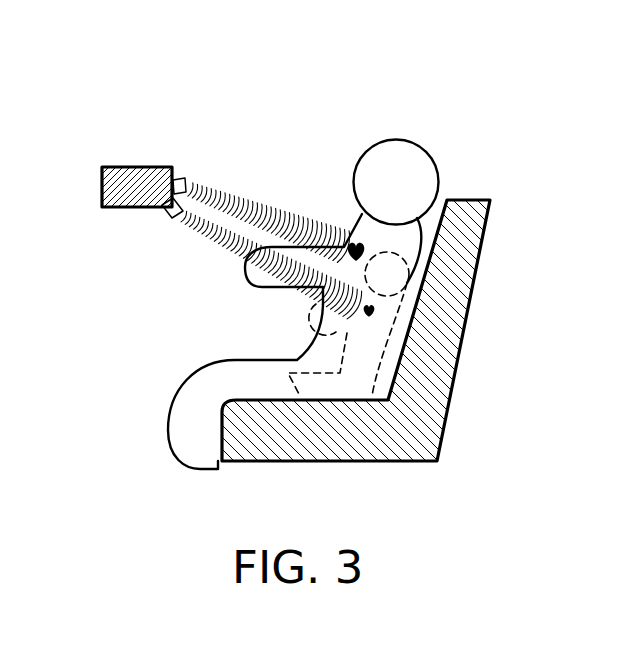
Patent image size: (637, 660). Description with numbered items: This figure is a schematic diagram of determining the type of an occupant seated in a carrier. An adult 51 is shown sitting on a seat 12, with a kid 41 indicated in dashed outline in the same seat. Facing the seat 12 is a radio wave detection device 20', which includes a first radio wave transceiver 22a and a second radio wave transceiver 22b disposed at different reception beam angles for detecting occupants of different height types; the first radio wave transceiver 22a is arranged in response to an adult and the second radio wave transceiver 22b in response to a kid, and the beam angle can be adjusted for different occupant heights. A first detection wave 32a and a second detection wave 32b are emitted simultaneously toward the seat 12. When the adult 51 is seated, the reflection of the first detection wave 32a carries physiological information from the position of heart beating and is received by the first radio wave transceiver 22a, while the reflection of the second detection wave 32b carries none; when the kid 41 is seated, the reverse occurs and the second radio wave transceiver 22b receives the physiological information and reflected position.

The seat 12 is at (474, 200).
The radio wave detection device 20' is at (133, 165).
The first radio wave transceiver 22a is at (177, 178).
The second radio wave transceiver 22b is at (176, 212).
The first detection wave 32a is at (263, 212).
The second detection wave 32b is at (213, 205).
The kid 41 is at (337, 383).
The adult 51 is at (400, 155).